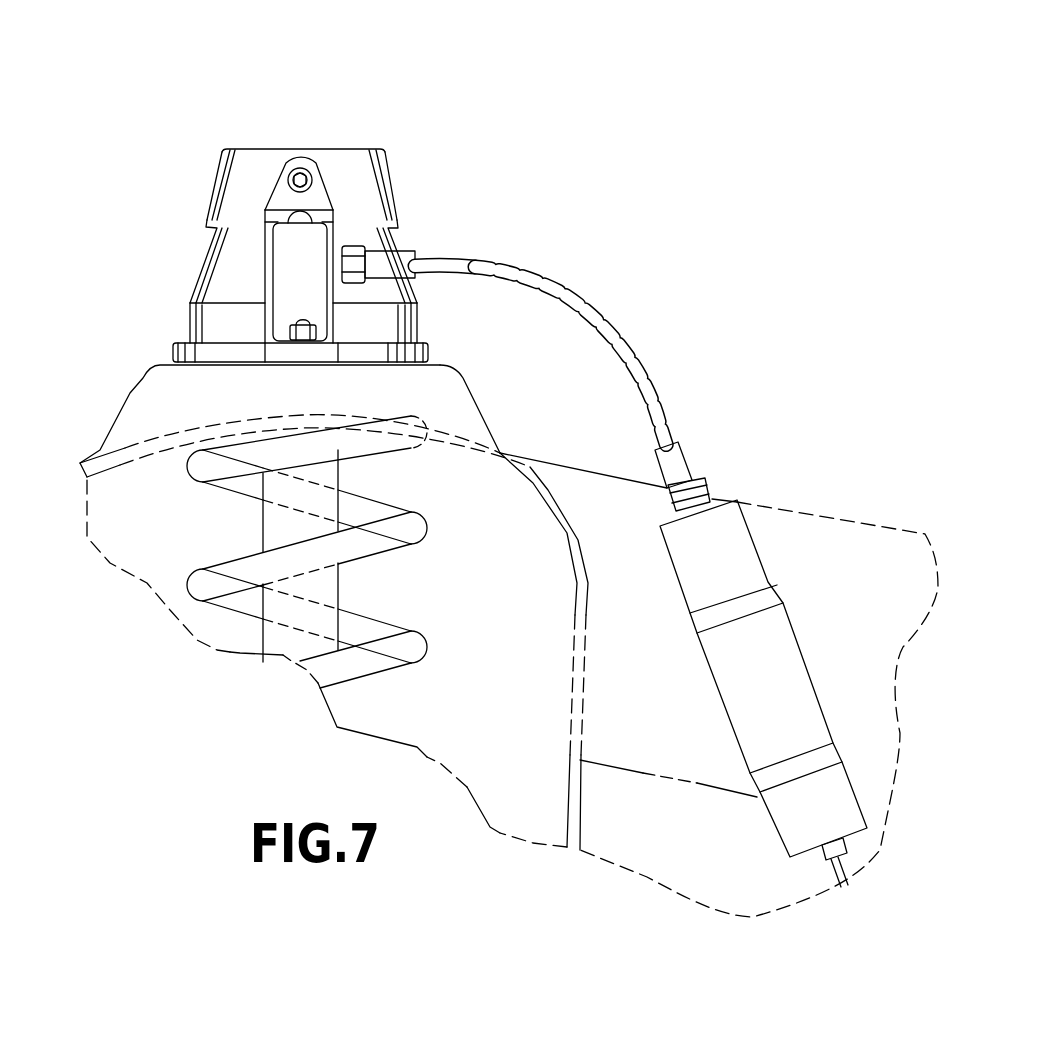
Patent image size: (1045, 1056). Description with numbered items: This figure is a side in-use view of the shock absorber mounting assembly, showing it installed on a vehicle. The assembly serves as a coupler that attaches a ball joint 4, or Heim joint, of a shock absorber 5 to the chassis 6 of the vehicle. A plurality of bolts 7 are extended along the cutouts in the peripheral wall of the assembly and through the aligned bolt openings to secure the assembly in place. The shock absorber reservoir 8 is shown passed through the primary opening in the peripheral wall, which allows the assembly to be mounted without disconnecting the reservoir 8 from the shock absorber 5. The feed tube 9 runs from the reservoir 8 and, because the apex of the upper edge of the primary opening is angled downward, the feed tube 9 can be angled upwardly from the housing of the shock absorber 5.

The ball joint 4 is at (298, 212).
The shock absorber 5 is at (262, 634).
The chassis 6 is at (130, 394).
The bolts 7 is at (303, 324).
The shock absorber reservoir 8 is at (752, 541).
The feed tube 9 is at (586, 296).